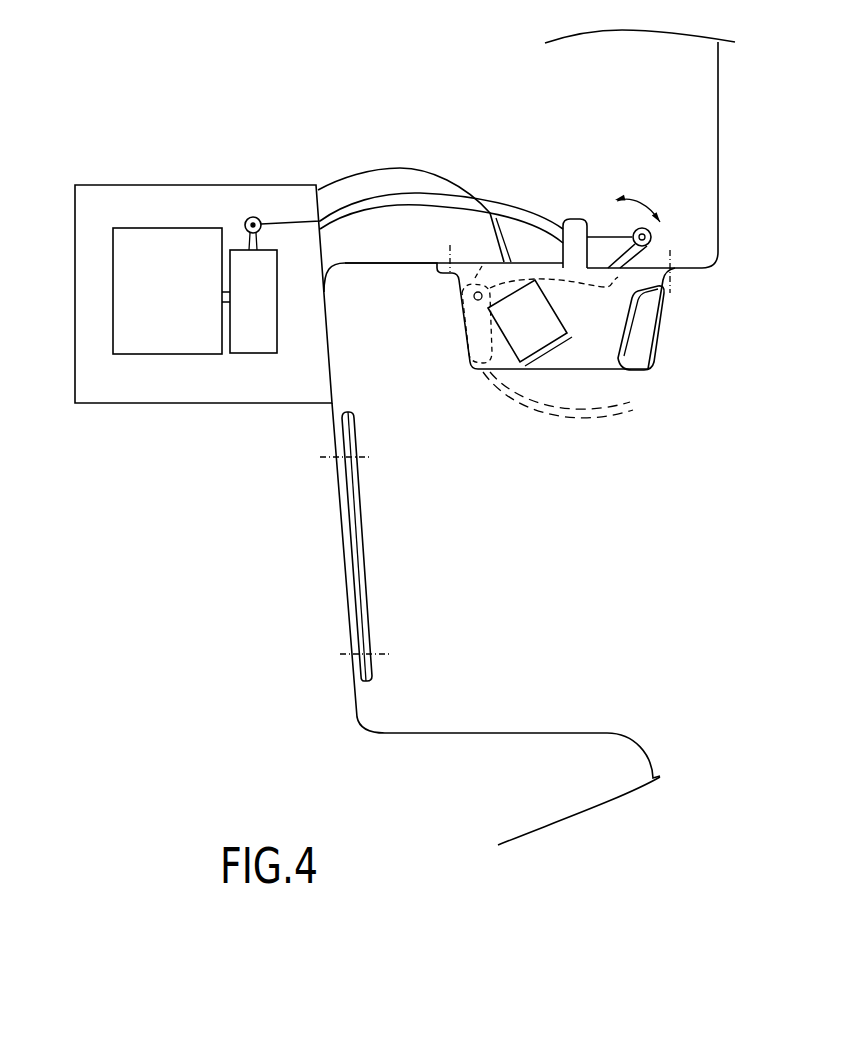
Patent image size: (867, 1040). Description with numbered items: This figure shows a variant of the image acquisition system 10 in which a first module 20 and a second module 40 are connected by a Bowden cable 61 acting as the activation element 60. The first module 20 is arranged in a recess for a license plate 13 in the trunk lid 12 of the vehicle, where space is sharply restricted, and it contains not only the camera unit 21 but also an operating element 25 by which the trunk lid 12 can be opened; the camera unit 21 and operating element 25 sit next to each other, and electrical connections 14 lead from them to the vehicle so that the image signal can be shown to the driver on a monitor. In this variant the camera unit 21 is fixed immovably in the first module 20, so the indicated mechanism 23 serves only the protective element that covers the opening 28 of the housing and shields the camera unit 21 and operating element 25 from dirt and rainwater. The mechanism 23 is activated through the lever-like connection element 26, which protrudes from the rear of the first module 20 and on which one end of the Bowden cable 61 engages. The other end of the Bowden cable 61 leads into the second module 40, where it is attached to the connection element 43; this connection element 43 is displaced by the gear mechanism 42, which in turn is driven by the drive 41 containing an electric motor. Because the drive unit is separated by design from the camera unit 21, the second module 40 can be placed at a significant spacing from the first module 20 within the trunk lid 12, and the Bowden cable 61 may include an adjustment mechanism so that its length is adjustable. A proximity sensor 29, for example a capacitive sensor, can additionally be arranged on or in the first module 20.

The image acquisition system 10 is at (654, 457).
The trunk lid 12 is at (686, 96).
The license plate 13 is at (365, 573).
The electrical connections 14 is at (375, 166).
The first module 20 is at (455, 375).
The camera unit 21 is at (536, 329).
The mechanism 23 is at (503, 268).
The operating element 25 is at (687, 328).
The connection element 26 is at (656, 238).
The opening 28 is at (600, 373).
The proximity sensor 29 is at (628, 322).
The second module 40 is at (219, 145).
The drive 41 is at (172, 303).
The gear mechanism 42 is at (264, 303).
The connection element 43 is at (259, 218).
The activation element 60 is at (427, 195).
The Bowden cable 61 is at (510, 200).